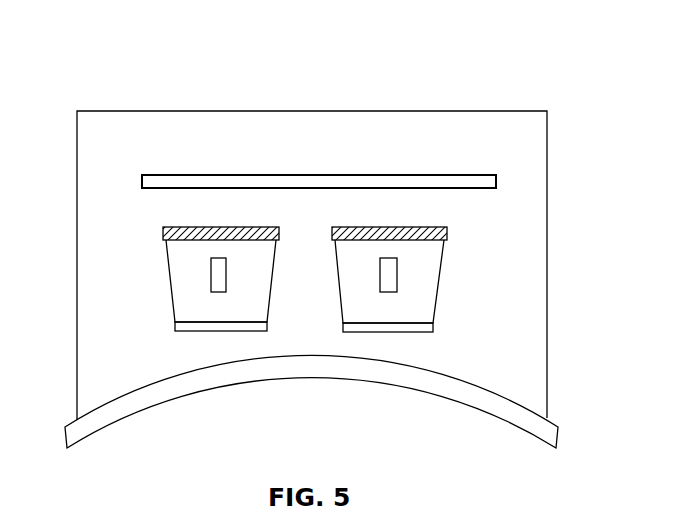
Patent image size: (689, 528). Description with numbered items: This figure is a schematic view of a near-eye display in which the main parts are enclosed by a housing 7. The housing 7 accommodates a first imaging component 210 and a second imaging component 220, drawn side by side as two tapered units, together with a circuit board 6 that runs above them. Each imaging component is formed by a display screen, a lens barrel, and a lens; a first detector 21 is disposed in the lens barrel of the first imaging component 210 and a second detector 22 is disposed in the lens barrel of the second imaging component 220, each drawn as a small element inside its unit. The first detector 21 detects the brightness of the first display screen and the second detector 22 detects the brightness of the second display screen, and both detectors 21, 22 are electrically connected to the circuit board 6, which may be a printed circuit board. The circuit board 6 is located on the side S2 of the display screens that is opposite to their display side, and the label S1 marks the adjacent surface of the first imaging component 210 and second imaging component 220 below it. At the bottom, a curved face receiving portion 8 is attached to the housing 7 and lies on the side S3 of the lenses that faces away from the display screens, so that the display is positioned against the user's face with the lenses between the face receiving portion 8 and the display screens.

The housing 7 is at (395, 110).
The circuit board 6 is at (490, 176).
The face receiving portion 8 is at (228, 377).
The first detector 21 is at (220, 277).
The second detector 22 is at (388, 273).
The first imaging component 210 is at (192, 236).
The second imaging component 220 is at (421, 236).
The first surface S1 is at (343, 242).
The side of display screens opposite the display side S2 is at (343, 227).
The side of lenses away from display screens S3 is at (177, 335).